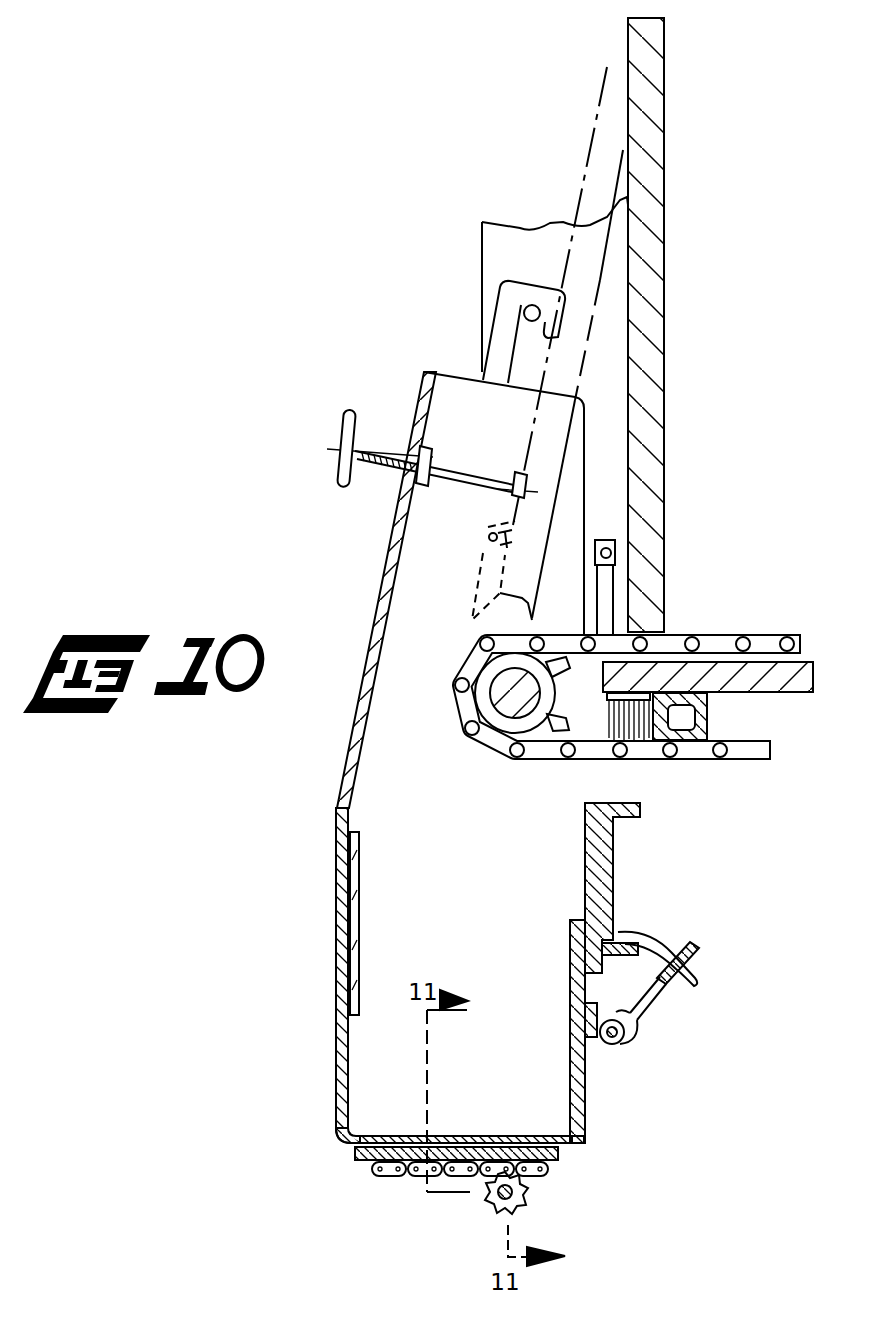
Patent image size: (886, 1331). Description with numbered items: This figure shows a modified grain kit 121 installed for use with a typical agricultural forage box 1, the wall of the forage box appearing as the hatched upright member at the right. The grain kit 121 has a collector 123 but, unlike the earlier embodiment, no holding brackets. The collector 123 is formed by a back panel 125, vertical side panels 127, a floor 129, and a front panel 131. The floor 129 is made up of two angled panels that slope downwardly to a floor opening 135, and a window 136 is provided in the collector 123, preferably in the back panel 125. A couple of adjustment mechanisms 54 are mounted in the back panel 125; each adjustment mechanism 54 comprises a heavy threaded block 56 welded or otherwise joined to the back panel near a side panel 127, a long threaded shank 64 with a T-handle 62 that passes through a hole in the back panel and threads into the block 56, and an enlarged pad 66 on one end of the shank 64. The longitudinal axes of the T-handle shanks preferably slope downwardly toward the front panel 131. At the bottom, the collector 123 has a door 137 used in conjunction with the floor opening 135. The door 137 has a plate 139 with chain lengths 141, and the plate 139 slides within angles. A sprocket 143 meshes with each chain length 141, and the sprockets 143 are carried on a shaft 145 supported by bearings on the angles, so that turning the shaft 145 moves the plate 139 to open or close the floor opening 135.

The forage box 1 is at (668, 106).
The adjustment mechanism 54 is at (322, 470).
The threaded block 56 is at (440, 457).
The T-handle 62 is at (342, 418).
The threaded shank 64 is at (393, 480).
The enlarged pad 66 is at (520, 488).
The grain kit 121 is at (334, 882).
The collector 123 is at (334, 950).
The back panel 125 is at (336, 1033).
The vertical side panel 127 is at (500, 846).
The floor 129 is at (362, 1130).
The front panel 131 is at (585, 1105).
The floor opening 135 is at (520, 1145).
The window 136 is at (360, 842).
The door 137 is at (356, 1152).
The plate 139 is at (477, 1153).
The chain length 141 is at (390, 1176).
The sprocket 143 is at (493, 1212).
The shaft 145 is at (530, 1195).